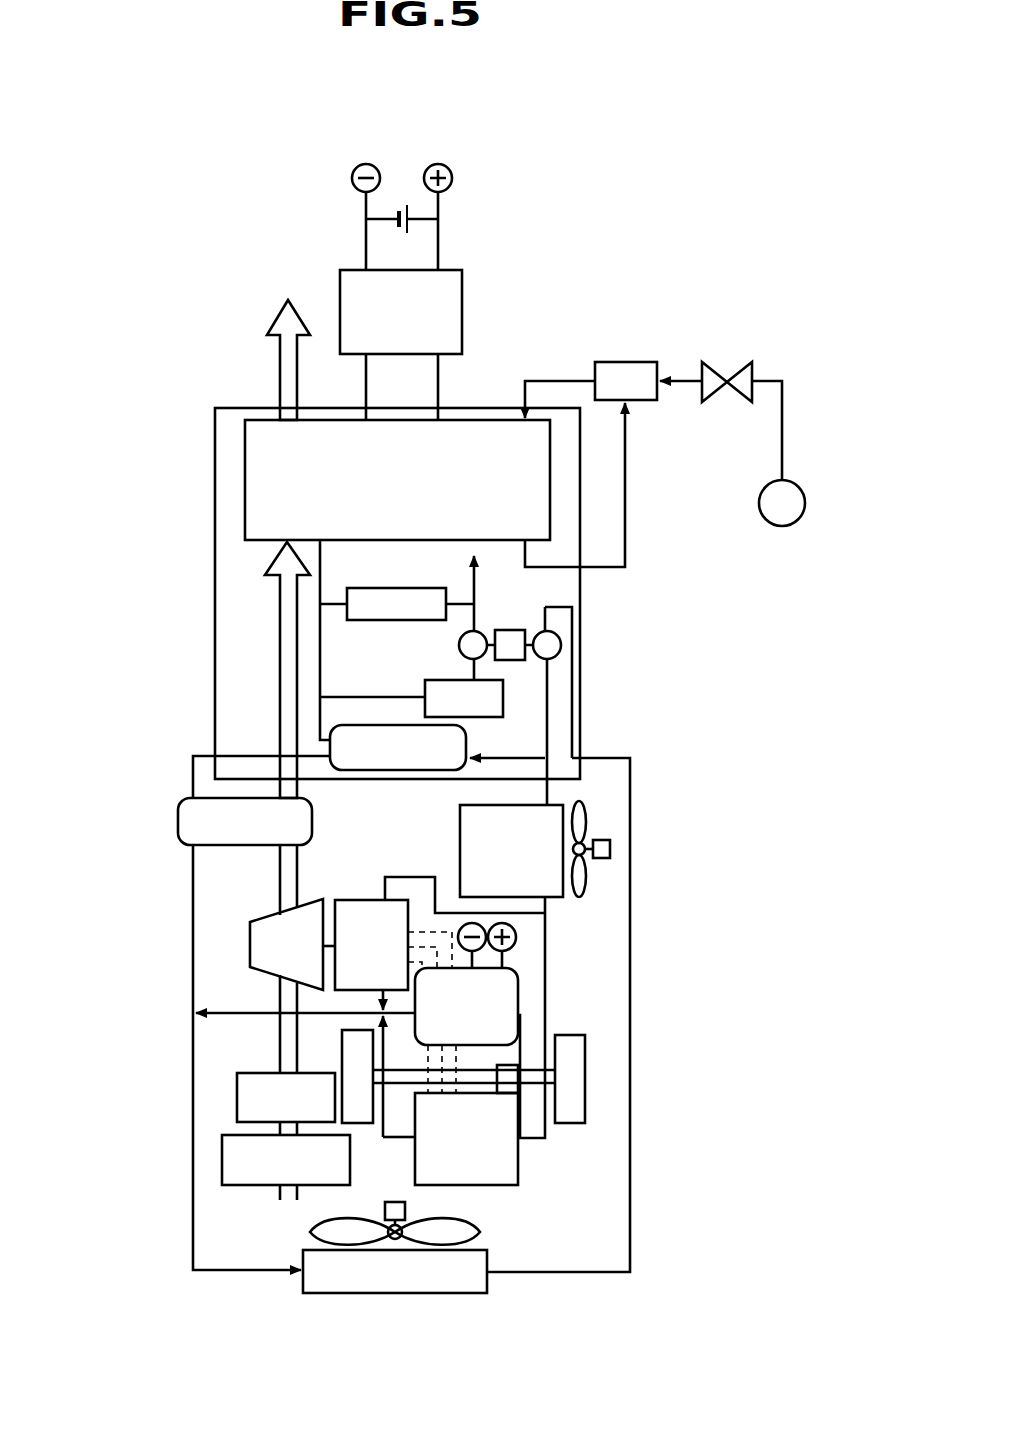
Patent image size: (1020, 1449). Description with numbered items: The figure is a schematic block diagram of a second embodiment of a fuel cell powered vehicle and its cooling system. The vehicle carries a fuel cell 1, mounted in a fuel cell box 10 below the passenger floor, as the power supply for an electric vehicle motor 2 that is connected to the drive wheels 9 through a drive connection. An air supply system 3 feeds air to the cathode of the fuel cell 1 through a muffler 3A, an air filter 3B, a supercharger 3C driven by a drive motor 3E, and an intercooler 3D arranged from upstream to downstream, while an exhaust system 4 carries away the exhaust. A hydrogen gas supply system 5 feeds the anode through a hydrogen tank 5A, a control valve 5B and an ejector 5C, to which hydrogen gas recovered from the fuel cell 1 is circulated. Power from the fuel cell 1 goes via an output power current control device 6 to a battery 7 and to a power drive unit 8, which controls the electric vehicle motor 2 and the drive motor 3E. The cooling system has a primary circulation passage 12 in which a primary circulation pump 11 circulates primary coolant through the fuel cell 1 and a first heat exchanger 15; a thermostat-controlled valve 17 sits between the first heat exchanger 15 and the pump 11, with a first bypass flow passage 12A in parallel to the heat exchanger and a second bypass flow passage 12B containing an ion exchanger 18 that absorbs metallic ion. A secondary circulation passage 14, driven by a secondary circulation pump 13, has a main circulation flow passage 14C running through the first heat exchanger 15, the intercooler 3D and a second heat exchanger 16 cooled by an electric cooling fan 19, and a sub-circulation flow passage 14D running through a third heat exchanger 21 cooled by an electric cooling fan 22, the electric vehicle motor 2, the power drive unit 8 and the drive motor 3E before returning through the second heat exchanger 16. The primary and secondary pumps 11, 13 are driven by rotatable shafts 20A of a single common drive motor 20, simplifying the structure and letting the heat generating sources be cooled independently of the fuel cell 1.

The fuel cell 1 is at (243, 487).
The electric vehicle motor 2 is at (518, 1162).
The air supply system 3 is at (275, 1192).
The muffler 3A is at (222, 1160).
The air filter 3B is at (237, 1105).
The supercharger 3C is at (250, 950).
The intercooler 3D is at (178, 843).
The drive motor of the supercharger 3E is at (352, 882).
The exhaust system 4 is at (278, 377).
The hydrogen gas supply system 5 is at (667, 300).
The hydrogen tank 5A is at (765, 530).
The control valve 5B is at (705, 362).
The ejector 5C is at (627, 362).
The output power current control device 6 is at (462, 300).
The battery 7 is at (405, 202).
The power drive unit 8 is at (518, 985).
The drive wheels 9 is at (342, 1052).
The fuel cell box 10 is at (215, 526).
The primary circulation pump 11 is at (485, 612).
The primary circulation passage 12 is at (318, 655).
The first bypass flow passage 12A is at (336, 697).
The second bypass flow passage 12B is at (345, 600).
The secondary circulation pump 13 is at (561, 644).
The secondary circulation passage 14 is at (190, 982).
The main circulation flow passage 14C is at (245, 756).
The sub-circulation flow passage 14D is at (545, 937).
The first heat exchanger 15 is at (410, 790).
The second heat exchanger 16 is at (487, 1283).
The thermostat-controlled valve 17 is at (503, 697).
The ion exchanger 18 is at (280, 575).
The electric cooling fan 19 is at (457, 1223).
The drive motor 20 is at (500, 630).
The rotatable shafts 20A is at (503, 683).
The third heat exchanger 21 is at (460, 840).
The electric cooling fan 22 is at (585, 885).